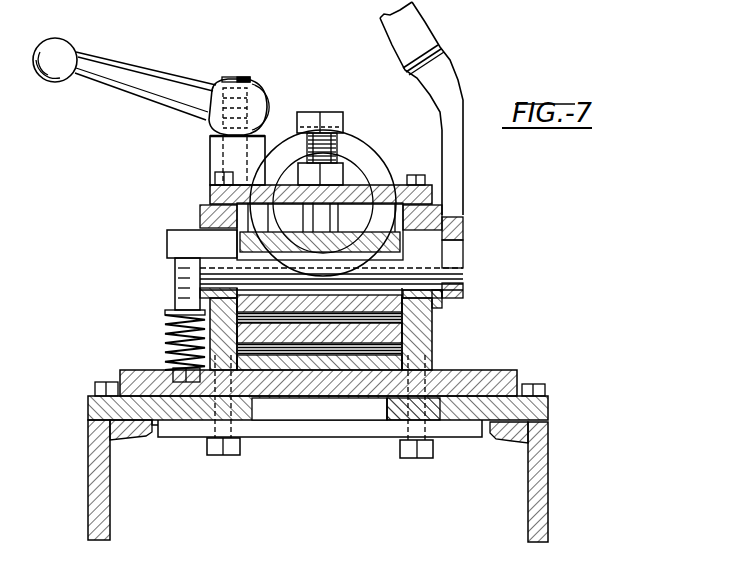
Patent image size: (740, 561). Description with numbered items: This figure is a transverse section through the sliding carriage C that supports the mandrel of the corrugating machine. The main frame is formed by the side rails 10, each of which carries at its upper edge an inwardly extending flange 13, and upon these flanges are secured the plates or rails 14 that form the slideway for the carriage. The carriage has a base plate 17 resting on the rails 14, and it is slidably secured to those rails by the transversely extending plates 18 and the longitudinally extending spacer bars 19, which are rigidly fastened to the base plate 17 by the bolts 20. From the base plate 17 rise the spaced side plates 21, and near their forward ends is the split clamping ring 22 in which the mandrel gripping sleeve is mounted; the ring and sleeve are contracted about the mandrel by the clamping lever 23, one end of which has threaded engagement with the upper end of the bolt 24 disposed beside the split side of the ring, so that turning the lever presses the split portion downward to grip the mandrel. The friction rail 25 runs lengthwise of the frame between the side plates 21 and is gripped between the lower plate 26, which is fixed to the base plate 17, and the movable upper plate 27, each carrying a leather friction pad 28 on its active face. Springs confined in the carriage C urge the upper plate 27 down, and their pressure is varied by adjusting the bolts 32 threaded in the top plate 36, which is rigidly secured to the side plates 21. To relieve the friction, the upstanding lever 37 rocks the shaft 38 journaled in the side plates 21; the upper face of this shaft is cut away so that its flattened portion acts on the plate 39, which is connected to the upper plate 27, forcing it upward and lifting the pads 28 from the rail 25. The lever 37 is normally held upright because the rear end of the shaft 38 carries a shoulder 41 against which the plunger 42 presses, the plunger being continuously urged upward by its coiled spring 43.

The side rails 10 is at (94, 485).
The inwardly extending flange 13 is at (137, 437).
The plates or rails 14 is at (88, 407).
The base plate 17 is at (500, 358).
The transversely extending plates 18 is at (297, 432).
The longitudinally extending spacer bars 19 is at (390, 422).
The bolts 20 is at (230, 456).
The side plates 21 is at (208, 220).
The split clamping ring 22 is at (360, 142).
The clamping lever 23 is at (135, 88).
The bolt 24 is at (240, 78).
The friction rail 25 is at (422, 340).
The lower plate 26 is at (337, 368).
The upper plate 27 is at (445, 273).
The leather friction pad 28 is at (268, 298).
The bolts 32 is at (330, 112).
The top plate 36 is at (208, 193).
The upstanding lever 37 is at (443, 77).
The rocking shaft 38 is at (430, 242).
The plate 39 is at (384, 183).
The shoulder 41 is at (168, 242).
The plunger 42 is at (176, 277).
The coiled spring 43 is at (168, 337).
The sliding carriage C is at (132, 302).